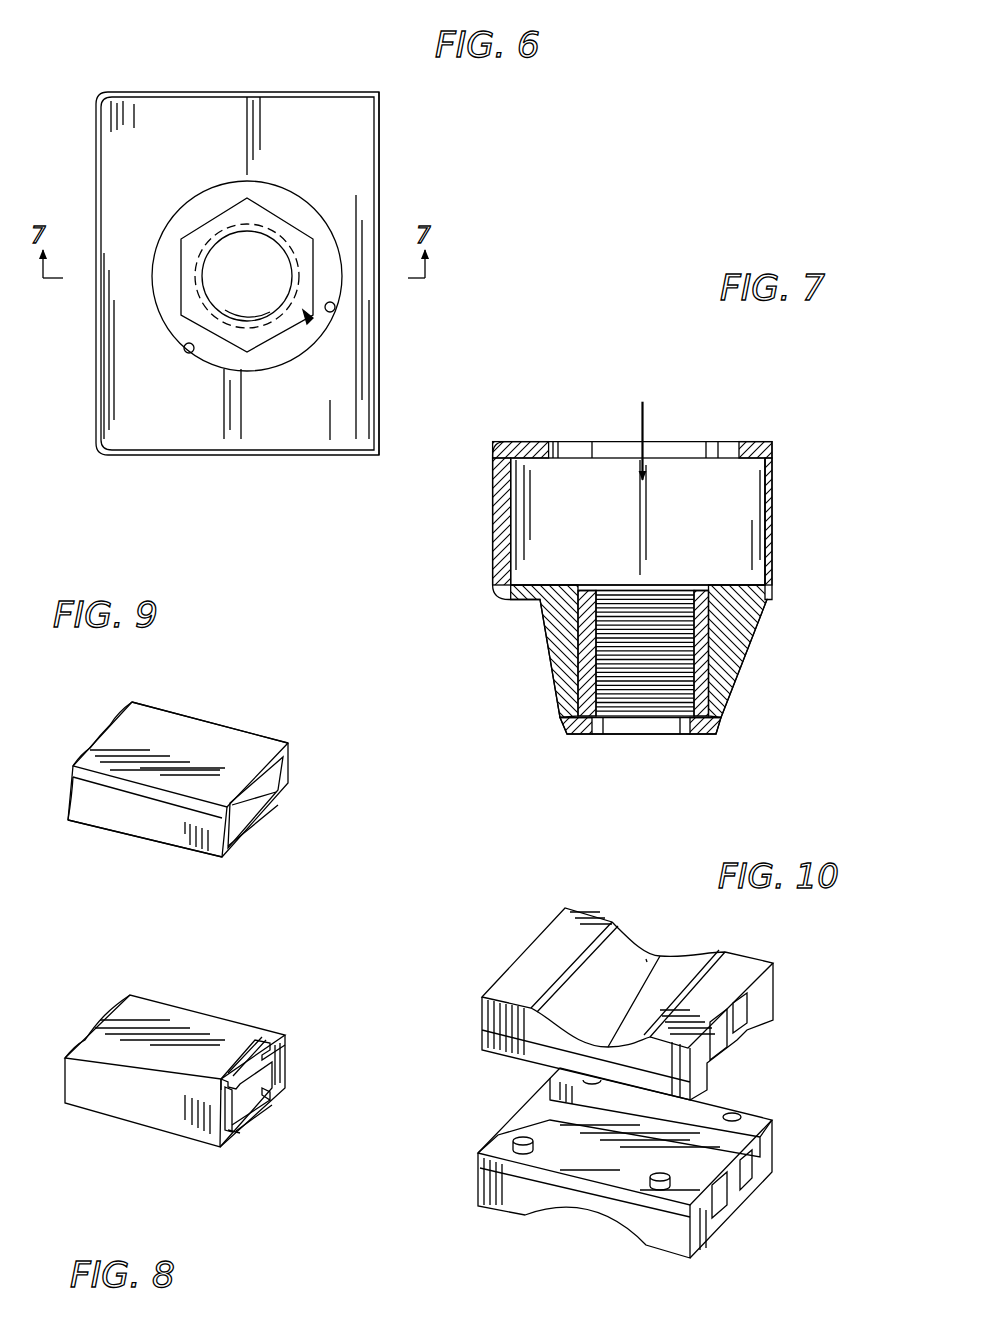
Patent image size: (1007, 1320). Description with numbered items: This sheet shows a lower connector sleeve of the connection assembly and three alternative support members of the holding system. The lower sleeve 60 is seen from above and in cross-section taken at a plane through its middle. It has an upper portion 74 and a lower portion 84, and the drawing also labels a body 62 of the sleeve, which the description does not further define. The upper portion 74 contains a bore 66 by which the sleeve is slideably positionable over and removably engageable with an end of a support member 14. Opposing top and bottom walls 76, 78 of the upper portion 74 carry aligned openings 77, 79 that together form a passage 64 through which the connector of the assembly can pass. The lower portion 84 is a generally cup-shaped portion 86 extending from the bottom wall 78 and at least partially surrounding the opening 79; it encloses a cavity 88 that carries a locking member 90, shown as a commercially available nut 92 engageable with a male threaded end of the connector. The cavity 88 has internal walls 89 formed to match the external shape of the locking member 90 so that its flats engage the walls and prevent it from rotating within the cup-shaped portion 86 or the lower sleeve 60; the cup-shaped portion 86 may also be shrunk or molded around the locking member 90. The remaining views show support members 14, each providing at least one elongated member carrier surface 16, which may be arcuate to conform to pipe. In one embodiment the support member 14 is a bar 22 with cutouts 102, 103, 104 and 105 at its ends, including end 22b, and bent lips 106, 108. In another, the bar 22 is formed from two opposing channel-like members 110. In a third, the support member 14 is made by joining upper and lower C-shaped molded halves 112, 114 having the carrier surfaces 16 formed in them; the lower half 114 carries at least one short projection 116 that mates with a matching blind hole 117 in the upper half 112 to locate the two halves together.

In FIG. 6, the lower sleeve 60 is at (115, 70).
In FIG. 7, the lower sleeve 60 is at (768, 396).
In FIG. 6, the body of stud 62 is at (123, 136).
In FIG. 7, the body of stud 62 is at (754, 436).
In FIG. 6, the passage 64 is at (327, 311).
In FIG. 7, the passage 64 is at (640, 418).
In FIG. 6, the bore 66 is at (379, 140).
In FIG. 7, the bore 66 is at (774, 465).
In FIG. 6, the upper portion 74 is at (327, 416).
In FIG. 7, the upper portion 74 is at (480, 543).
In FIG. 6, the top wall 76 is at (327, 152).
In FIG. 7, the top wall 76 is at (538, 454).
In FIG. 6, the opening 77 is at (190, 353).
In FIG. 7, the opening 77 is at (728, 451).
In FIG. 6, the bottom wall 78 is at (164, 296).
In FIG. 7, the bottom wall 78 is at (542, 601).
In FIG. 6, the opening 79 is at (292, 231).
In FIG. 7, the opening 79 is at (701, 587).
In FIG. 7, the lower portion 84 is at (509, 701).
In FIG. 6, the generally cup-shaped portion 86 is at (309, 319).
In FIG. 7, the generally cup-shaped portion 86 is at (565, 730).
In FIG. 6, the cavity 88 is at (258, 295).
In FIG. 7, the cavity 88 is at (708, 590).
In FIG. 7, the internal walls 89 is at (707, 658).
In FIG. 6, the locking member 90 is at (266, 325).
In FIG. 7, the locking member 90 is at (663, 719).
In FIG. 7, the nut 92 is at (698, 690).
In FIG. 9, the support member 14 is at (238, 690).
In FIG. 8, the support member 14 is at (315, 987).
In FIG. 10, the support member 14 is at (453, 1139).
In FIG. 10, the elongated member carrier surface 16 is at (646, 959).
In FIG. 9, the bar 22 is at (273, 732).
In FIG. 8, the bar 22 is at (112, 1032).
In FIG. 8, the end of bar 22b is at (187, 1157).
In FIG. 8, the cutout 102 is at (217, 1077).
In FIG. 8, the cutout 103 is at (288, 1058).
In FIG. 8, the cutout 104 is at (243, 1120).
In FIG. 8, the cutout 105 is at (268, 1097).
In FIG. 8, the bent lip 106 is at (250, 1037).
In FIG. 8, the bent lip 108 is at (242, 1127).
In FIG. 9, the channel-like member 110 is at (162, 727).
In FIG. 10, the upper C-shaped molded half 112 is at (486, 1013).
In FIG. 10, the lower C-shaped molded half 114 is at (485, 1206).
In FIG. 10, the short projection 116 is at (659, 1190).
In FIG. 10, the blind hole 117 is at (495, 1054).